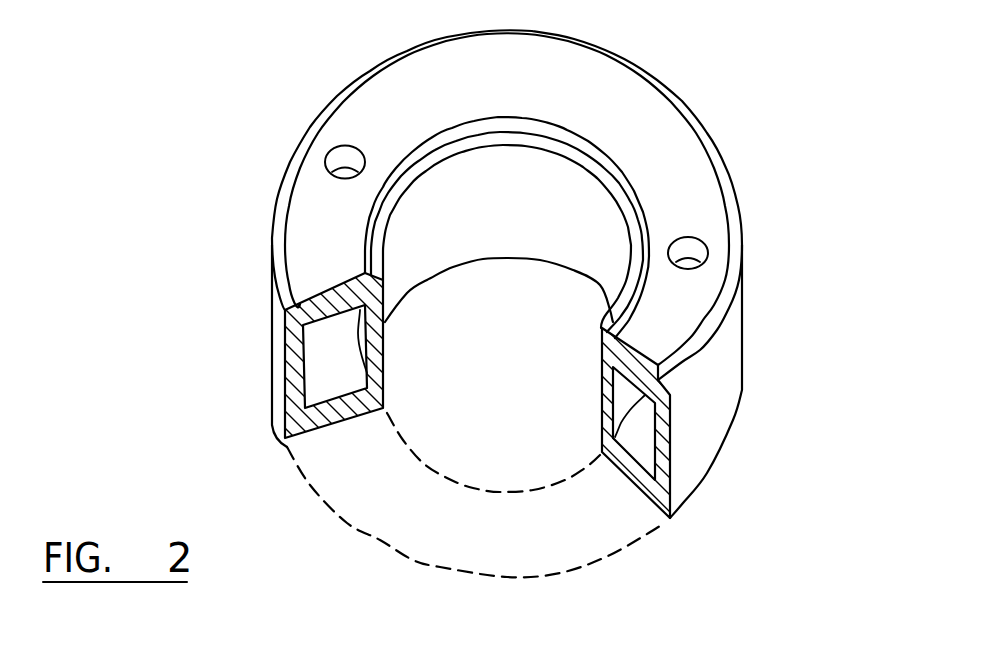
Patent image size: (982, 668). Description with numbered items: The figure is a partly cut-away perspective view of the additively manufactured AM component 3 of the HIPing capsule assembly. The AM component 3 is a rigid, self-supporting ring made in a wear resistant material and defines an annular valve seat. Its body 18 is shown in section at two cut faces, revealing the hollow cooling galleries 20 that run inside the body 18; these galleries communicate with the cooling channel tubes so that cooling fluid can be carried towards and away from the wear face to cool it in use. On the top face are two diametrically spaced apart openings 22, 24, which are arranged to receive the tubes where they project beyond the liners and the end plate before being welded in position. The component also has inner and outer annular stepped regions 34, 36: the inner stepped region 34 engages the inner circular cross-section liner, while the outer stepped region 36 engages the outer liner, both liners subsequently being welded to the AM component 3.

The AM component 3 is at (338, 56).
The body 18 is at (663, 453).
The cooling galleries 20 is at (323, 362).
The opening 22 is at (337, 158).
The opening 24 is at (697, 252).
The inner annular stepped region 34 is at (380, 218).
The outer annular stepped region 36 is at (274, 268).